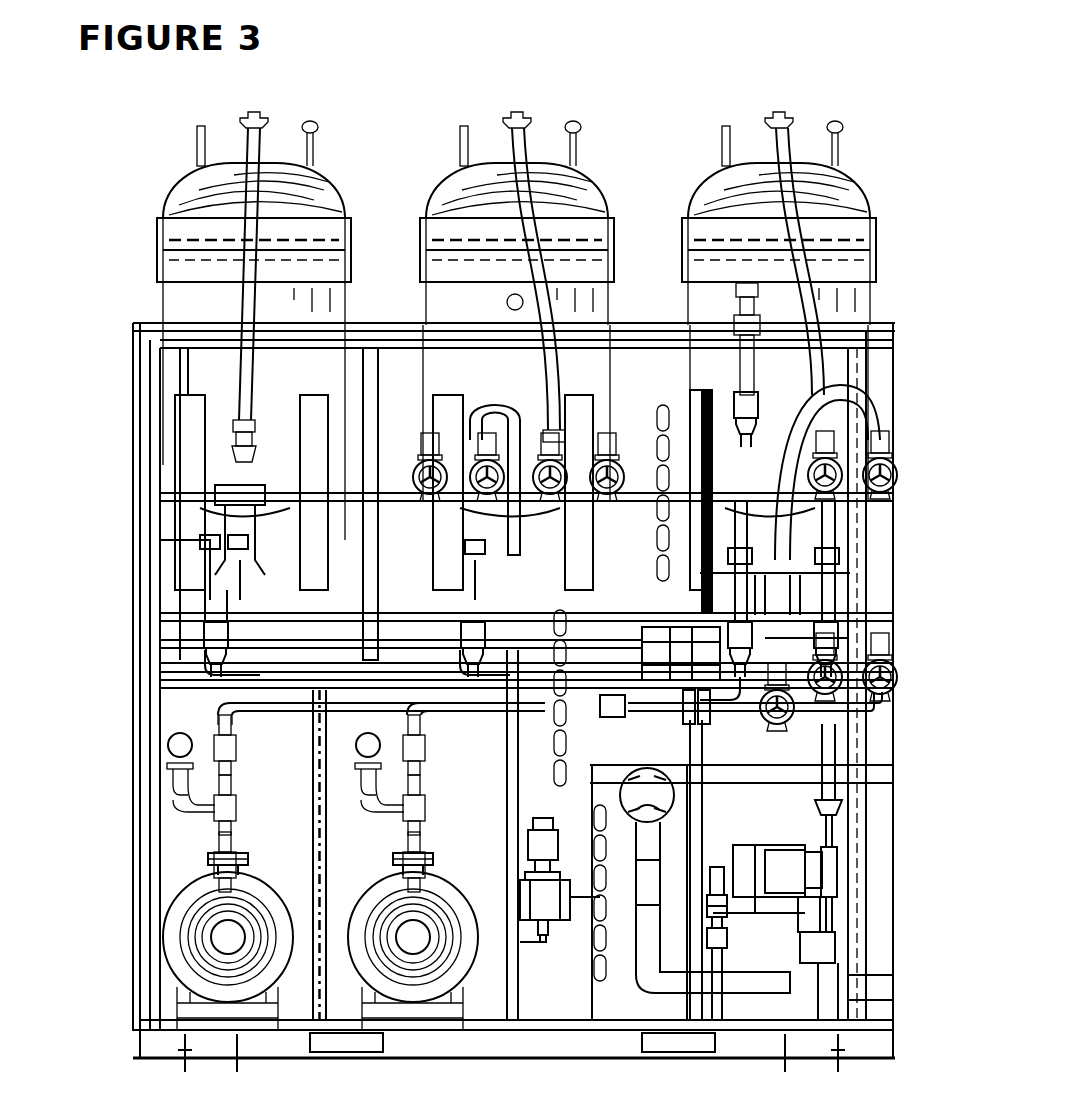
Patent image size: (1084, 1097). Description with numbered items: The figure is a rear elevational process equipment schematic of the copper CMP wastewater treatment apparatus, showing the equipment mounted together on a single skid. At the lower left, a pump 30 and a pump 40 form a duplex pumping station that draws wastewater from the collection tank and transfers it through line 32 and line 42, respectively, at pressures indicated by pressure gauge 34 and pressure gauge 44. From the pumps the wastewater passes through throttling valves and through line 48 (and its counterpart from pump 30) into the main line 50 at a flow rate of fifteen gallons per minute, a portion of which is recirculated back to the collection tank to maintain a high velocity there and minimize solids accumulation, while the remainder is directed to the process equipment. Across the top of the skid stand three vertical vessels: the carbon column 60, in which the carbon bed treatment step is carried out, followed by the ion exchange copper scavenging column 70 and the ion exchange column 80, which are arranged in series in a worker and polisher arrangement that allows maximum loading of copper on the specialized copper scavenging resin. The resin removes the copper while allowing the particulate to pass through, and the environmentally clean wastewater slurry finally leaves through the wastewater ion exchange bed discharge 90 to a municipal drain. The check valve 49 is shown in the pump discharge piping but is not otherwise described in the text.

The carbon column 60 is at (190, 178).
The ion exchange copper scavenging column 70 is at (447, 175).
The ion exchange column 80 is at (712, 175).
The wastewater ion exchange bed discharge 90 is at (215, 612).
The pressure gauge 44 is at (170, 790).
The line 48 is at (232, 718).
The line 42 is at (238, 848).
The pump 40 is at (248, 880).
The pressure gauge 34 is at (358, 765).
The main line 50 is at (460, 715).
The check valve 49 is at (427, 780).
The line 32 is at (427, 848).
The pump 30 is at (448, 880).